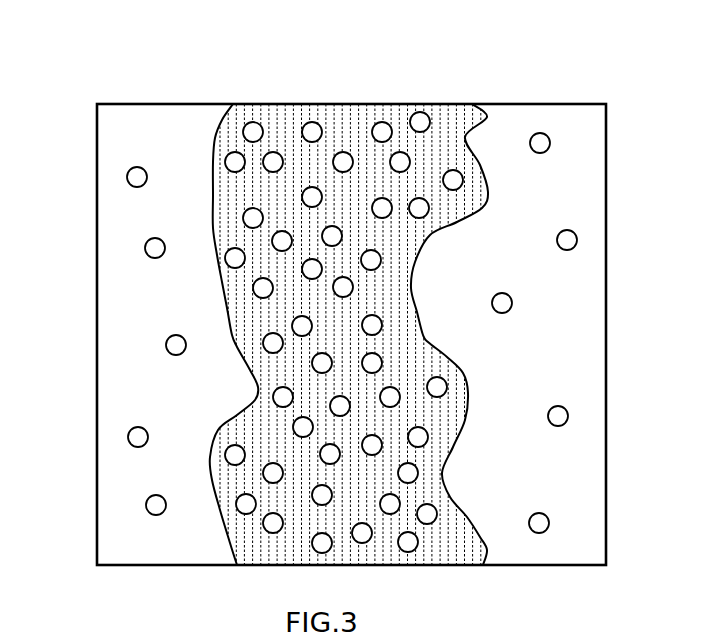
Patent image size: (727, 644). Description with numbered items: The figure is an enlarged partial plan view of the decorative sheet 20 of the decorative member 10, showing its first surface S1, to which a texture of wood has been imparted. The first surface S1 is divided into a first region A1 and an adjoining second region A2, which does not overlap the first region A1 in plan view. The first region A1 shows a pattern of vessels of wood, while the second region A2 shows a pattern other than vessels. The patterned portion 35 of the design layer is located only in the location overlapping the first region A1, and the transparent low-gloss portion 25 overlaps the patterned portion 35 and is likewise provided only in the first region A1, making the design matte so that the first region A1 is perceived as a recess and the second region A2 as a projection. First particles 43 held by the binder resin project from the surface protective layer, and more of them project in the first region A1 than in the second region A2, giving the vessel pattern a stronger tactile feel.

The decorative member 10 is at (396, 287).
The decorative sheet 20 is at (396, 287).
The first surface S1 is at (543, 86).
The first region A1 is at (279, 104).
The second region A2 is at (149, 104).
The low-gloss portion 25 is at (349, 293).
The patterned portion 35 is at (349, 293).
The first particles 43 is at (225, 260).